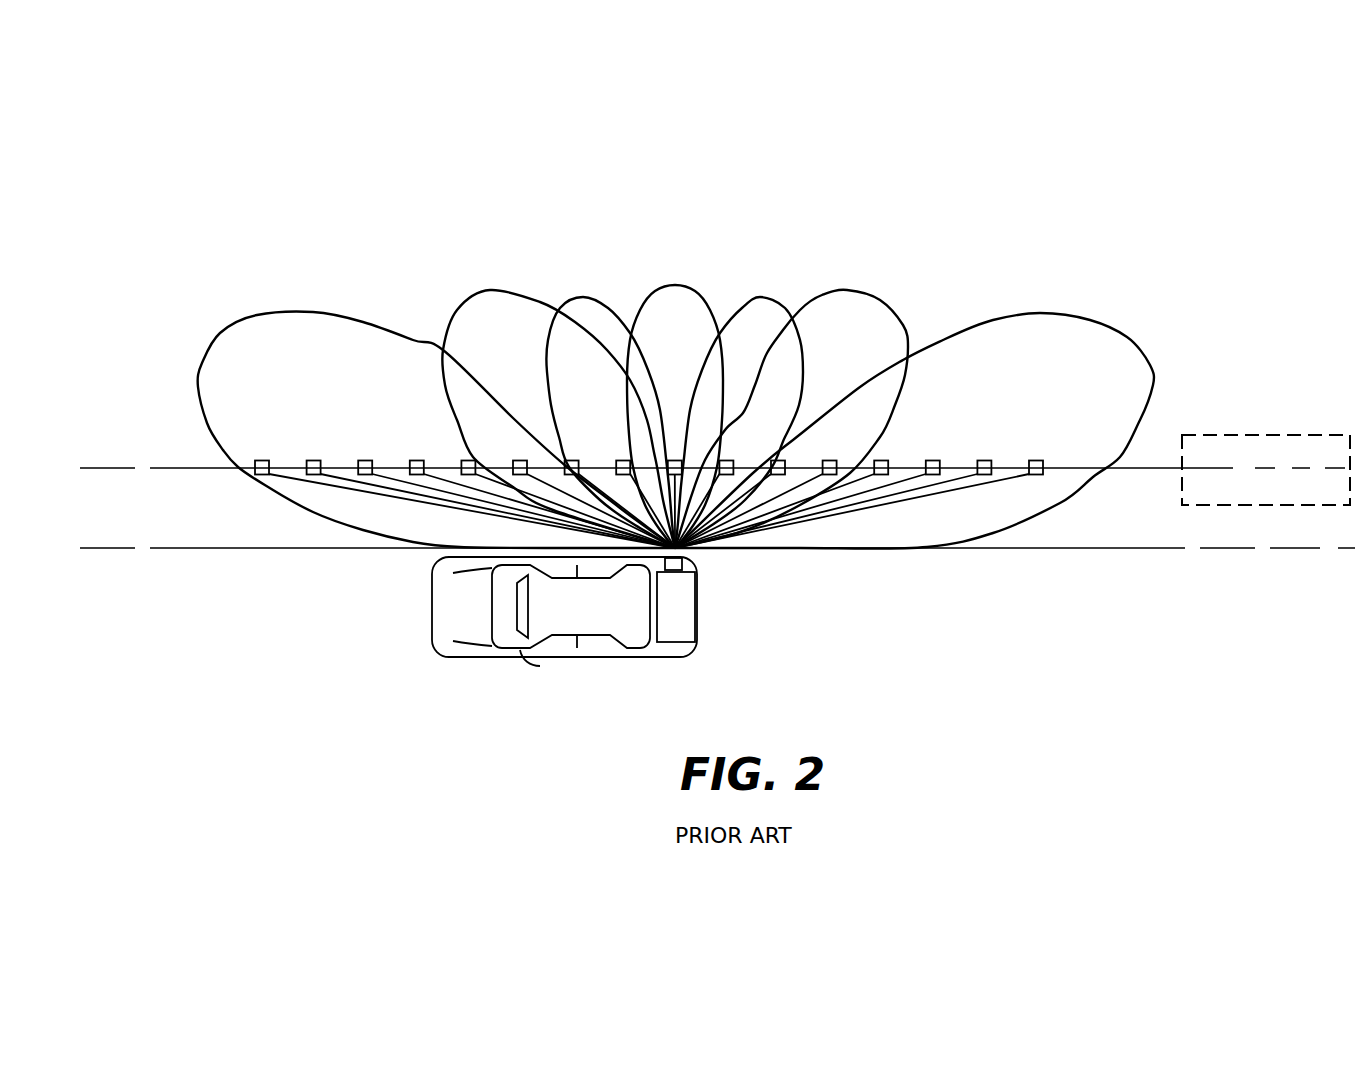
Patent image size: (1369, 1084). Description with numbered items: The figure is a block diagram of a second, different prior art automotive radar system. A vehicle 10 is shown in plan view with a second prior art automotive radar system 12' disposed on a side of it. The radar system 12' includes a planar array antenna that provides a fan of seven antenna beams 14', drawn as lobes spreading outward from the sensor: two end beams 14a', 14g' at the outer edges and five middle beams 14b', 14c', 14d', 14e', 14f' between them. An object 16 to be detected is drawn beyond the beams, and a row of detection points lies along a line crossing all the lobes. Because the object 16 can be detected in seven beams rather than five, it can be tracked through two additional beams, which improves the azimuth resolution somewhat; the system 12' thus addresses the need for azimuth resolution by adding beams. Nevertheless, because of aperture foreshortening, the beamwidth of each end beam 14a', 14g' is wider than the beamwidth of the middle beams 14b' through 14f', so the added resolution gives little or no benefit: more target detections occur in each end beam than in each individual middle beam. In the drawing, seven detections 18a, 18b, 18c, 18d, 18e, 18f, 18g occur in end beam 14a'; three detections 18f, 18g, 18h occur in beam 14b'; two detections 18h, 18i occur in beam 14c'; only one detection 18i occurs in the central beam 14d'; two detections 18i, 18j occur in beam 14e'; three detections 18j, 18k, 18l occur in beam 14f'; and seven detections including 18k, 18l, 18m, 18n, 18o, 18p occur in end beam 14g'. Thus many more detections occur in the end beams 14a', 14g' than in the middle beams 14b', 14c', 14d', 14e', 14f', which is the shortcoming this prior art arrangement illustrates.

The vehicle 10 is at (432, 612).
The second prior art automotive radar system 12' is at (740, 577).
The antenna beams 14' is at (719, 363).
The end beam 14a' is at (436, 393).
The middle beam 14b' is at (558, 388).
The middle beam 14c' is at (610, 390).
The middle beam 14d' is at (675, 383).
The middle beam 14e' is at (739, 385).
The middle beam 14f' is at (791, 383).
The end beam 14g' is at (914, 395).
The object 16 is at (1268, 435).
The detection 18a is at (262, 460).
The detection 18b is at (314, 460).
The detection 18c is at (365, 460).
The detection 18d is at (417, 460).
The detection 18e is at (468, 460).
The detection 18f is at (520, 460).
The detection 18g is at (572, 460).
The detection 18h is at (623, 460).
The detection 18i is at (675, 460).
The detection 18j is at (726, 460).
The detection 18k is at (778, 460).
The detection 18l is at (830, 460).
The detection 18m is at (881, 460).
The detection 18n is at (933, 460).
The detection 18o is at (984, 460).
The detection 18p is at (870, 478).